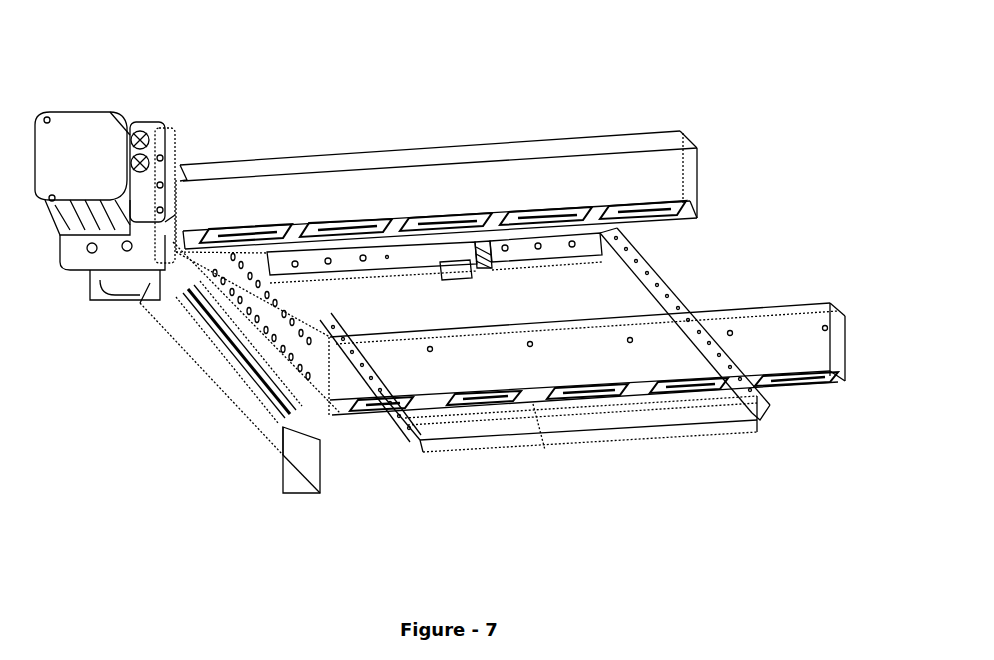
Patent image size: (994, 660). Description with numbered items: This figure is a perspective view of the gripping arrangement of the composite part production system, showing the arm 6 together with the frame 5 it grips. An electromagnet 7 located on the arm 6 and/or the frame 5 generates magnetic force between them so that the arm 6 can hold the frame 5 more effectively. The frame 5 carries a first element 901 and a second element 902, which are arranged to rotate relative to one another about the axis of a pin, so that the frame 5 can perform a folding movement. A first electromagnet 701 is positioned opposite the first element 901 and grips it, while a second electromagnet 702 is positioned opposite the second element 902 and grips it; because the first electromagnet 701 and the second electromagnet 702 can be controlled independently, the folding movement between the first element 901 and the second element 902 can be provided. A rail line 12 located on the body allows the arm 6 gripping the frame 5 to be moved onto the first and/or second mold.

The frame 5 is at (650, 300).
The arm 6 is at (618, 176).
The electromagnet 7 is at (605, 312).
The rail line 12 is at (108, 253).
The first electromagnet 701 is at (548, 397).
The second electromagnet 702 is at (703, 388).
The first element 901 is at (462, 265).
The second element 902 is at (340, 270).